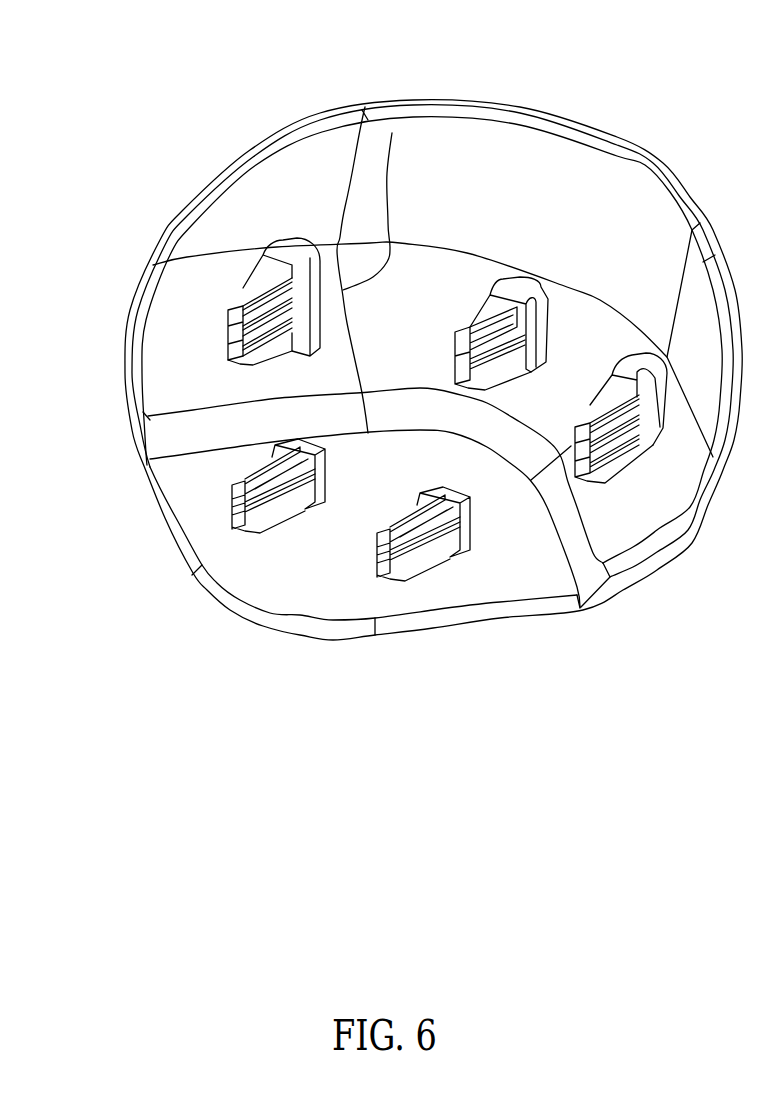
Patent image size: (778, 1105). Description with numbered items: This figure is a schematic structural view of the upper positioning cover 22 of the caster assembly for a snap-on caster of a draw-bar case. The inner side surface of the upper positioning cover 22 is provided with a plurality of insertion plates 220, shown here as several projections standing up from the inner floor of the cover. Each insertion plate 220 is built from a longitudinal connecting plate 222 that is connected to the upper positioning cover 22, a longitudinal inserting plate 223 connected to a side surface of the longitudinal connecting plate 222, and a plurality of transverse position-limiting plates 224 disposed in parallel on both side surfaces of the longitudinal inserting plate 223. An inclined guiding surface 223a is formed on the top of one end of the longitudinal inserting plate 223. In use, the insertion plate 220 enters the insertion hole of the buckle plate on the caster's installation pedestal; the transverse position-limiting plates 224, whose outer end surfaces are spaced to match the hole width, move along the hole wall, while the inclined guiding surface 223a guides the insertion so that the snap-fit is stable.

The upper positioning cover 22 is at (613, 145).
The insertion plate 220 is at (392, 133).
The longitudinal connecting plate 222 is at (304, 247).
The longitudinal inserting plate 223 is at (227, 337).
The inclined guiding surface 223a is at (257, 284).
The transverse position-limiting plate 224 is at (236, 330).